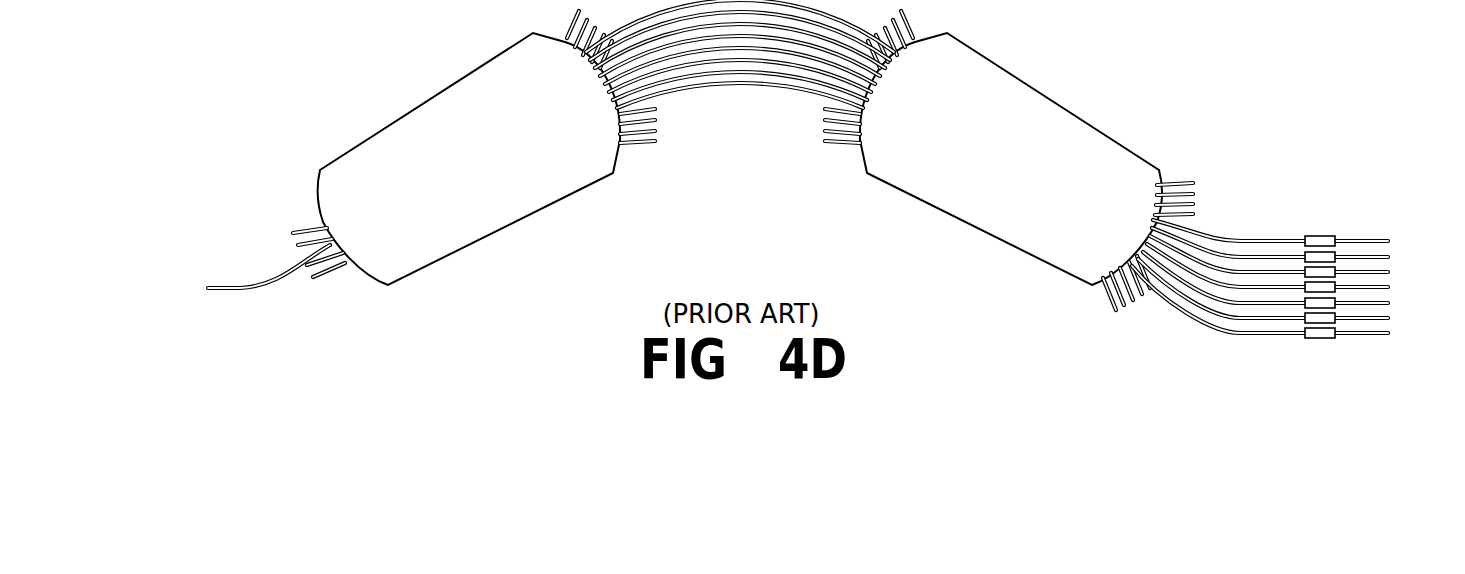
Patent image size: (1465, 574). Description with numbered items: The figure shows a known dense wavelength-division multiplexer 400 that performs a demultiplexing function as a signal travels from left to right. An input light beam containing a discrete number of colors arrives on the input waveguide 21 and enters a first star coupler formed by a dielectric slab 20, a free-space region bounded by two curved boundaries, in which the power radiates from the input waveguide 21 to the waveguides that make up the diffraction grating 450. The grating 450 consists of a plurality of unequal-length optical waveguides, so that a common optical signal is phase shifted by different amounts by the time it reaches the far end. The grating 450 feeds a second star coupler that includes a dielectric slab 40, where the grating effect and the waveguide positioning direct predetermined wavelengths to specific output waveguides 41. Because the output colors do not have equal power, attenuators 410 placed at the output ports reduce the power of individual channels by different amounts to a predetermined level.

The dense wavelength-division multiplexer 400 is at (351, 28).
The dielectric slab 20 is at (455, 173).
The input waveguide 21 is at (230, 281).
The dielectric slab 40 is at (996, 171).
The diffraction grating 450 is at (680, 103).
The output waveguide 41 is at (1397, 228).
The attenuator 410 is at (1317, 236).